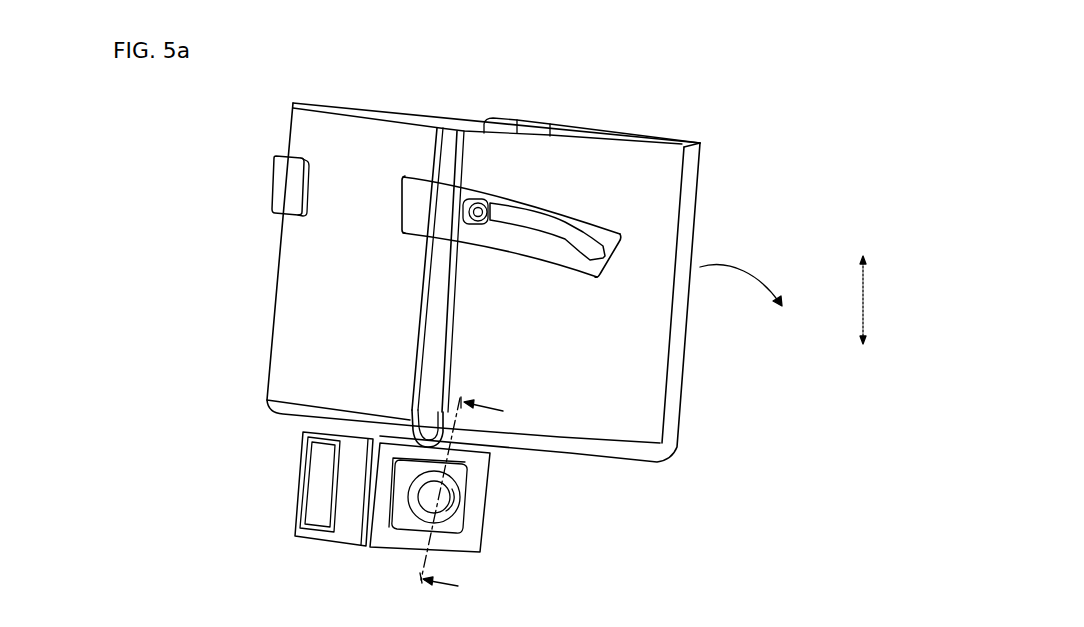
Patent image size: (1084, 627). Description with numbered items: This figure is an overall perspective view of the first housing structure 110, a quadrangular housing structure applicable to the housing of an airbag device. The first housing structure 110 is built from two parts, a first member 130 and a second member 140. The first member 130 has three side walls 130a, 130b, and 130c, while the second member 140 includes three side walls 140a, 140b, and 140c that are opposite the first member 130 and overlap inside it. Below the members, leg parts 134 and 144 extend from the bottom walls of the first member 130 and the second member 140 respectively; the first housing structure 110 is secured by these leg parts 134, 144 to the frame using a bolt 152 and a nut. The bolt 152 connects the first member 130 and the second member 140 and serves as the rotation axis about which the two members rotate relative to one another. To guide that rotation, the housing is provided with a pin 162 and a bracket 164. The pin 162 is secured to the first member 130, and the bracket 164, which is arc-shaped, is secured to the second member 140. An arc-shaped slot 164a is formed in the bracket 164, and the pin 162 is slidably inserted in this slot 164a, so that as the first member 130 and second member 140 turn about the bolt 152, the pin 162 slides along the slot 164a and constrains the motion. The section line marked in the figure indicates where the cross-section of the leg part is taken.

The first housing structure 110 is at (757, 97).
The first member 130 is at (692, 364).
The side wall 130a is at (668, 184).
The side wall 130b is at (612, 133).
The side wall 130c is at (524, 121).
The leg part 134 is at (480, 513).
The second member 140 is at (272, 267).
The side wall 140a is at (488, 120).
The side wall 140b is at (373, 127).
The side wall 140c is at (457, 118).
The leg part 144 is at (350, 533).
The bolt 152 is at (448, 496).
The pin 162 is at (478, 225).
The bracket 164 is at (408, 217).
The arc-shaped slot 164a is at (549, 226).